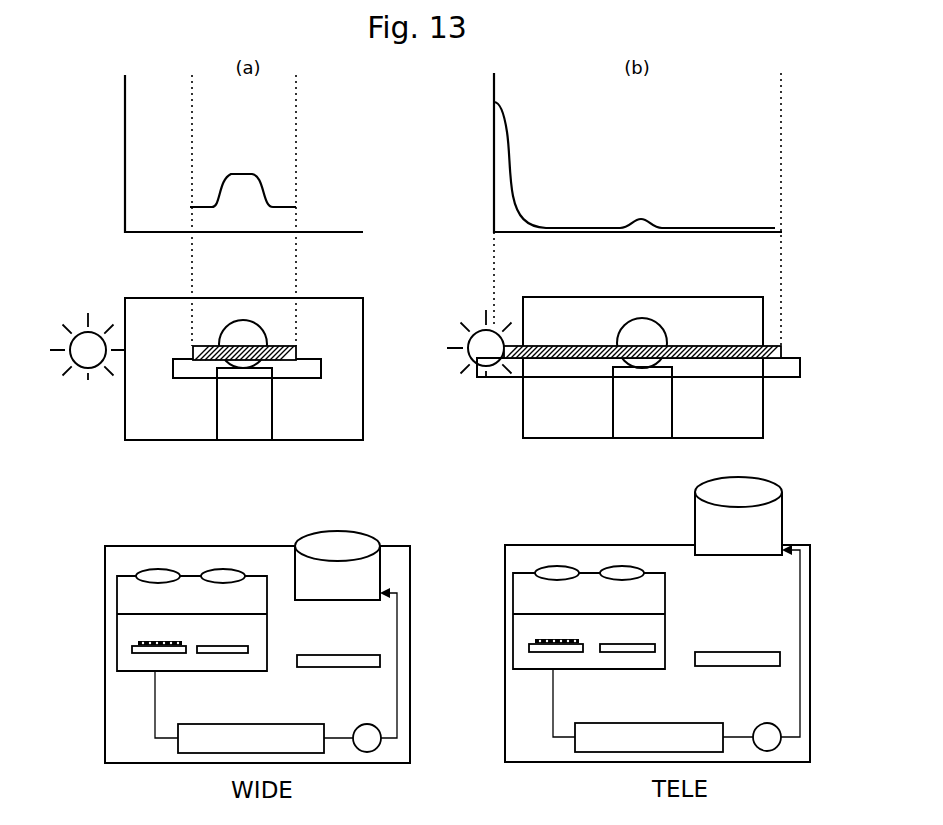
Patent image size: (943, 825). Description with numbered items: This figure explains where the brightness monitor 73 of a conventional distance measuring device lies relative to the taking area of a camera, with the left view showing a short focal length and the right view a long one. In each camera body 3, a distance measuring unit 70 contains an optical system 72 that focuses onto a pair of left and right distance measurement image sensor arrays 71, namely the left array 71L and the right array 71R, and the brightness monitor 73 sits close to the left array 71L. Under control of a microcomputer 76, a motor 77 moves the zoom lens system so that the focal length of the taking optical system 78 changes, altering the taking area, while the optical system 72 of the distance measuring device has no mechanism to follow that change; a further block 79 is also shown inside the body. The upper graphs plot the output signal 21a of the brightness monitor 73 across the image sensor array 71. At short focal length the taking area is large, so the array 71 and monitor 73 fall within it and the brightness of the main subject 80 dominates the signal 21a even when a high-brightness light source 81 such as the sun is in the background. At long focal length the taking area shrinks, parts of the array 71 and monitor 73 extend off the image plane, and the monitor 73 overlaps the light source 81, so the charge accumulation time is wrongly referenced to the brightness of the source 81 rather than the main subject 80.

The output signal 21a is at (286, 199).
The microcomputer 76 is at (348, 298).
The brightness monitor 73 is at (320, 357).
The distance measurement image sensor arrays 71 is at (321, 369).
The main subject 80 is at (245, 379).
The high-brightness light source 81 is at (90, 380).
The taking optical system 78 is at (345, 531).
The camera body 3 is at (392, 539).
The optical system of the distance measuring device 72 is at (205, 568).
The distance measuring unit 70 is at (128, 598).
The left image sensor array 71L is at (142, 653).
The right image sensor array 71R is at (245, 653).
The strobe / light emitting unit 79 is at (381, 662).
The motor 77 is at (368, 752).